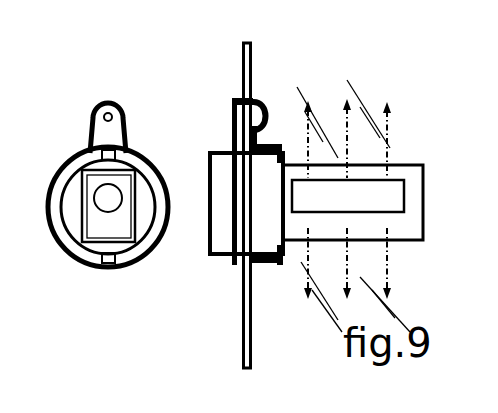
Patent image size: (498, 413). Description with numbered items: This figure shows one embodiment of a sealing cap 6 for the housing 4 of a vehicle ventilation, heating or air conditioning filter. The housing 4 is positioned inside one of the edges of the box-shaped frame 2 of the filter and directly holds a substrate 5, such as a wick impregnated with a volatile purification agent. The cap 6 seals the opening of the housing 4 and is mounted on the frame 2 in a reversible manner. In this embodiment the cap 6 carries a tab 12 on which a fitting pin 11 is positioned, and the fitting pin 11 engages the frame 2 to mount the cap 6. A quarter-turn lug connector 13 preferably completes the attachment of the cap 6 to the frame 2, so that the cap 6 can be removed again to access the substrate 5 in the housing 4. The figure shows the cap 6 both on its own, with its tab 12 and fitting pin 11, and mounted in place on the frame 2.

The frame 2 is at (252, 72).
The housing 4 is at (380, 234).
The substrate 5 is at (343, 212).
The cap 6 is at (72, 100).
The fitting pin 11 is at (262, 128).
The tab 12 is at (232, 112).
The quarter-turn lug connector 13 is at (284, 264).